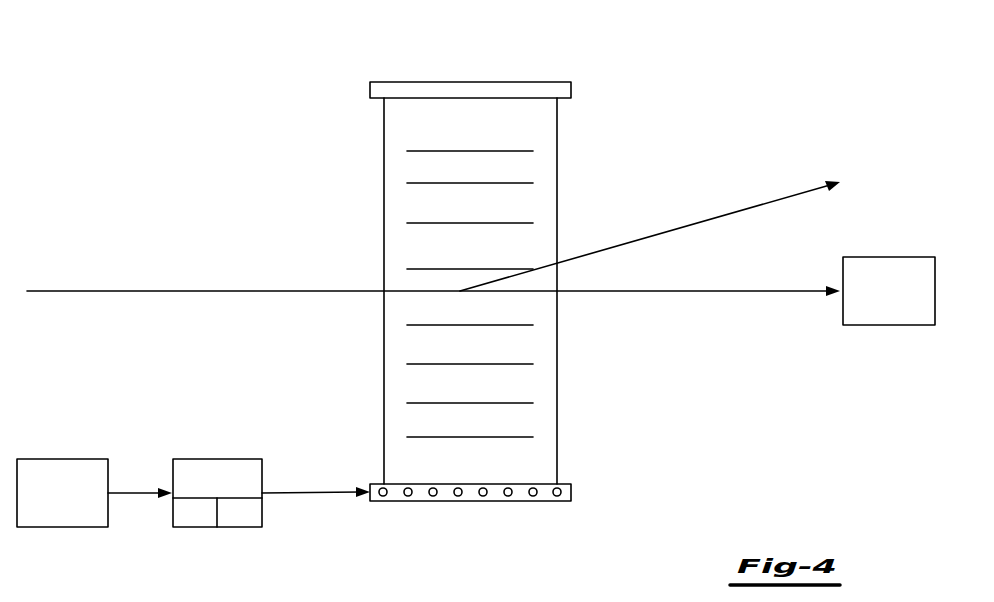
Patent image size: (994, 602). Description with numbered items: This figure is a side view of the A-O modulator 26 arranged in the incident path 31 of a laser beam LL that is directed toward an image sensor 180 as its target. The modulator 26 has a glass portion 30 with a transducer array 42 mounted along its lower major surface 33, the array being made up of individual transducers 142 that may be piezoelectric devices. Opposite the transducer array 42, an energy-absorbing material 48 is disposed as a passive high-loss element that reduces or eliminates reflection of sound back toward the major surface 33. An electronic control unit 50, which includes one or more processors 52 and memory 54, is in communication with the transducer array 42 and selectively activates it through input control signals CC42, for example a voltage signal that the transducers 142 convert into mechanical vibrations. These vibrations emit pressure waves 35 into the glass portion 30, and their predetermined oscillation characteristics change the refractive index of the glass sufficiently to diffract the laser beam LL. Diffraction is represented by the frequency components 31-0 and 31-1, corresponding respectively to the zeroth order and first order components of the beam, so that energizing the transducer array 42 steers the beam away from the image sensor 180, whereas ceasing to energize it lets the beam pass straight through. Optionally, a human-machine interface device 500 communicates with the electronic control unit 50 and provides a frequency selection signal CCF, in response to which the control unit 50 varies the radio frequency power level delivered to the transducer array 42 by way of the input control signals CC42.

The A-O modulator 26 is at (272, 84).
The energy-absorbing material 48 is at (571, 90).
The glass portion 30 is at (410, 127).
The pressure waves 35 is at (529, 150).
The transducer array 42 is at (571, 492).
The transducers 142 is at (557, 496).
The major surface 33 is at (542, 480).
The incident path 31 is at (77, 291).
The laser beam LL is at (228, 291).
The 0th order frequency component 31-0 is at (745, 292).
The 1st order frequency component 31-1 is at (723, 213).
The image sensor 180 is at (890, 257).
The human-machine interface device 500 is at (63, 459).
The electronic control unit 50 is at (218, 459).
The processor 52 is at (195, 527).
The memory 54 is at (240, 527).
The frequency selection signal CCF is at (139, 493).
The input control signals CC42 is at (315, 493).